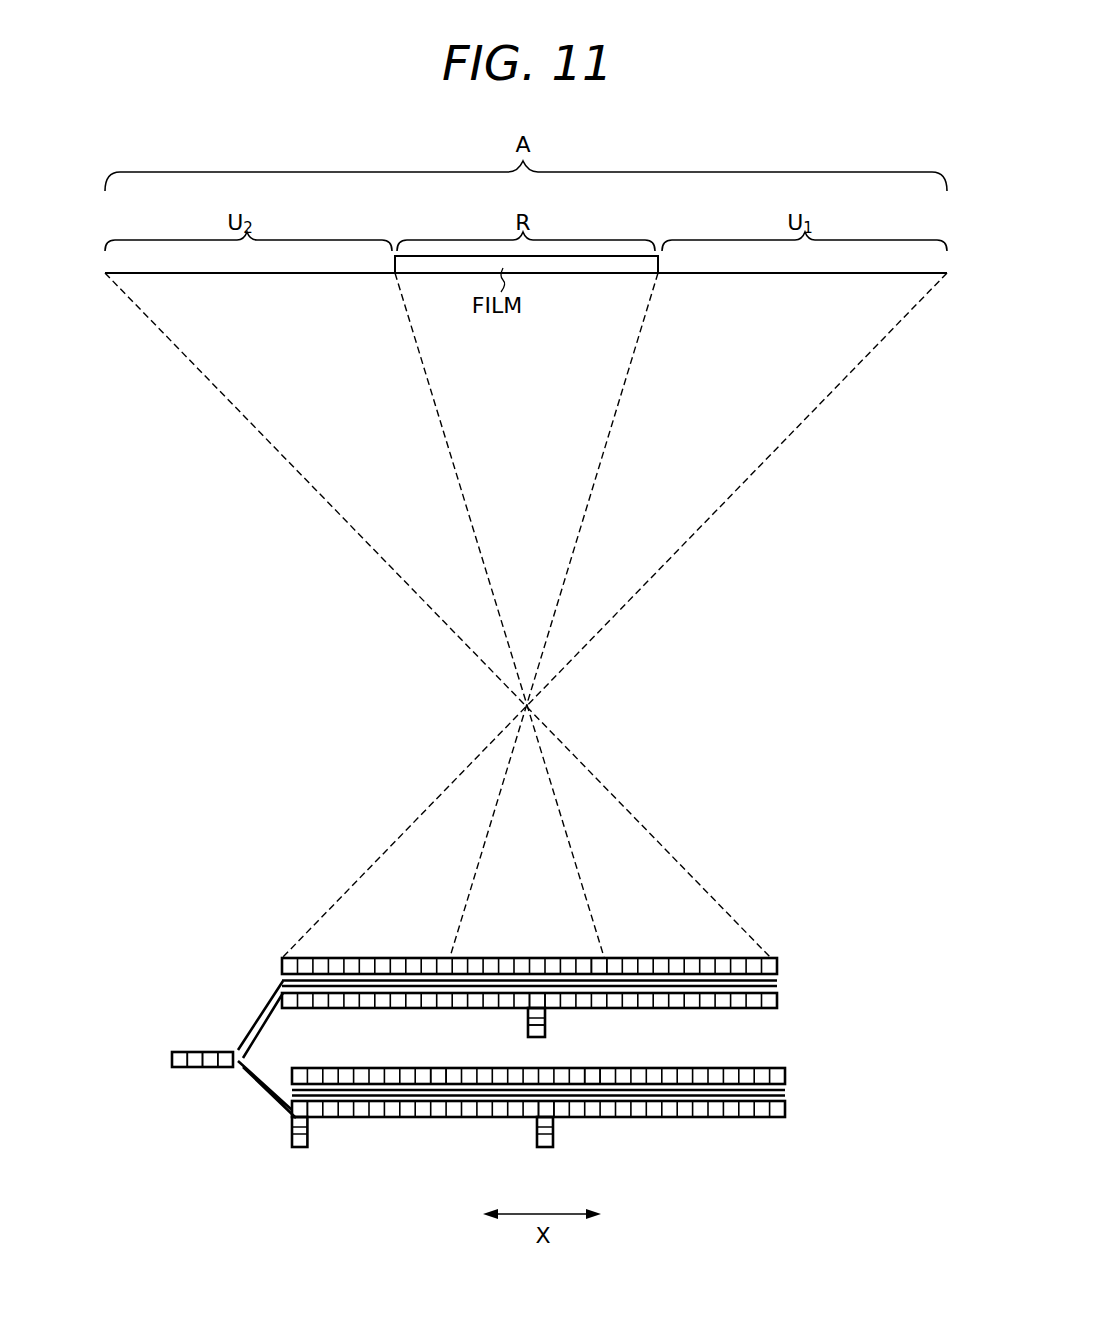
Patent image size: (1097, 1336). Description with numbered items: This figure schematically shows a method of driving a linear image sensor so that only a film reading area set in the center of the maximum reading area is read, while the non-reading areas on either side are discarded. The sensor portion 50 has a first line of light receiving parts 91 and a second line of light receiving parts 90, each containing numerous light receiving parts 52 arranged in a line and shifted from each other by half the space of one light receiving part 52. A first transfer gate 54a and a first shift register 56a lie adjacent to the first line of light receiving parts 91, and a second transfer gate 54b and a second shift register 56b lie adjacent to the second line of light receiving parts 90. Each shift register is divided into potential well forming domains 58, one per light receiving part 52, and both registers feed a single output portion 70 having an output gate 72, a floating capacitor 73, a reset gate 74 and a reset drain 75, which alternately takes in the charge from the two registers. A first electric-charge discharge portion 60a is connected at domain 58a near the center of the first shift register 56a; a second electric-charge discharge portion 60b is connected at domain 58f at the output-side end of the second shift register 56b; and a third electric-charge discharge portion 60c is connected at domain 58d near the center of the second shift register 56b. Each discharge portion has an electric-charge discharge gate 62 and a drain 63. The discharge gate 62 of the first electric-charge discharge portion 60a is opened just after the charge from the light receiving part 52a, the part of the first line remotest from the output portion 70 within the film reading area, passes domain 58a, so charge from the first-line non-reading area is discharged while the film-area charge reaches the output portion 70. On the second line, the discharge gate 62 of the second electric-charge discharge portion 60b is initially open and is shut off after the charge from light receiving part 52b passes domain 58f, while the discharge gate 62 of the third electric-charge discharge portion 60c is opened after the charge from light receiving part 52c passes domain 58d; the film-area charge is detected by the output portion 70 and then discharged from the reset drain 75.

The sensor portion 50 is at (524, 1040).
The light receiving part 52 is at (434, 960).
The light receiving part 52a is at (600, 965).
The light receiving part 52b is at (437, 1078).
The light receiving part 52c is at (595, 1074).
The first transfer gate 54a is at (282, 984).
The second transfer gate 54b is at (292, 1093).
The first shift register 56a is at (357, 1012).
The second shift register 56b is at (646, 1128).
The potential well forming domain 58 is at (663, 1000).
The domain of first shift register 58a is at (537, 1000).
The domain of second shift register 58d is at (548, 1110).
The domain of second shift register 58f is at (300, 1110).
The first electric-charge discharge portion 60a is at (391, 1089).
The second electric-charge discharge portion 60b is at (237, 1128).
The third electric-charge discharge portion 60c is at (483, 1128).
The electric-charge discharge gate 62 is at (528, 1021).
The drain 63 is at (528, 1031).
The output portion 70 is at (193, 1025).
The output gate 72 is at (233, 1041).
The floating capacitor 73 is at (210, 1058).
The reset gate 74 is at (195, 1058).
The reset drain 75 is at (178, 1058).
The second line of light receiving parts 90 is at (752, 1058).
The first line of light receiving parts 91 is at (475, 952).